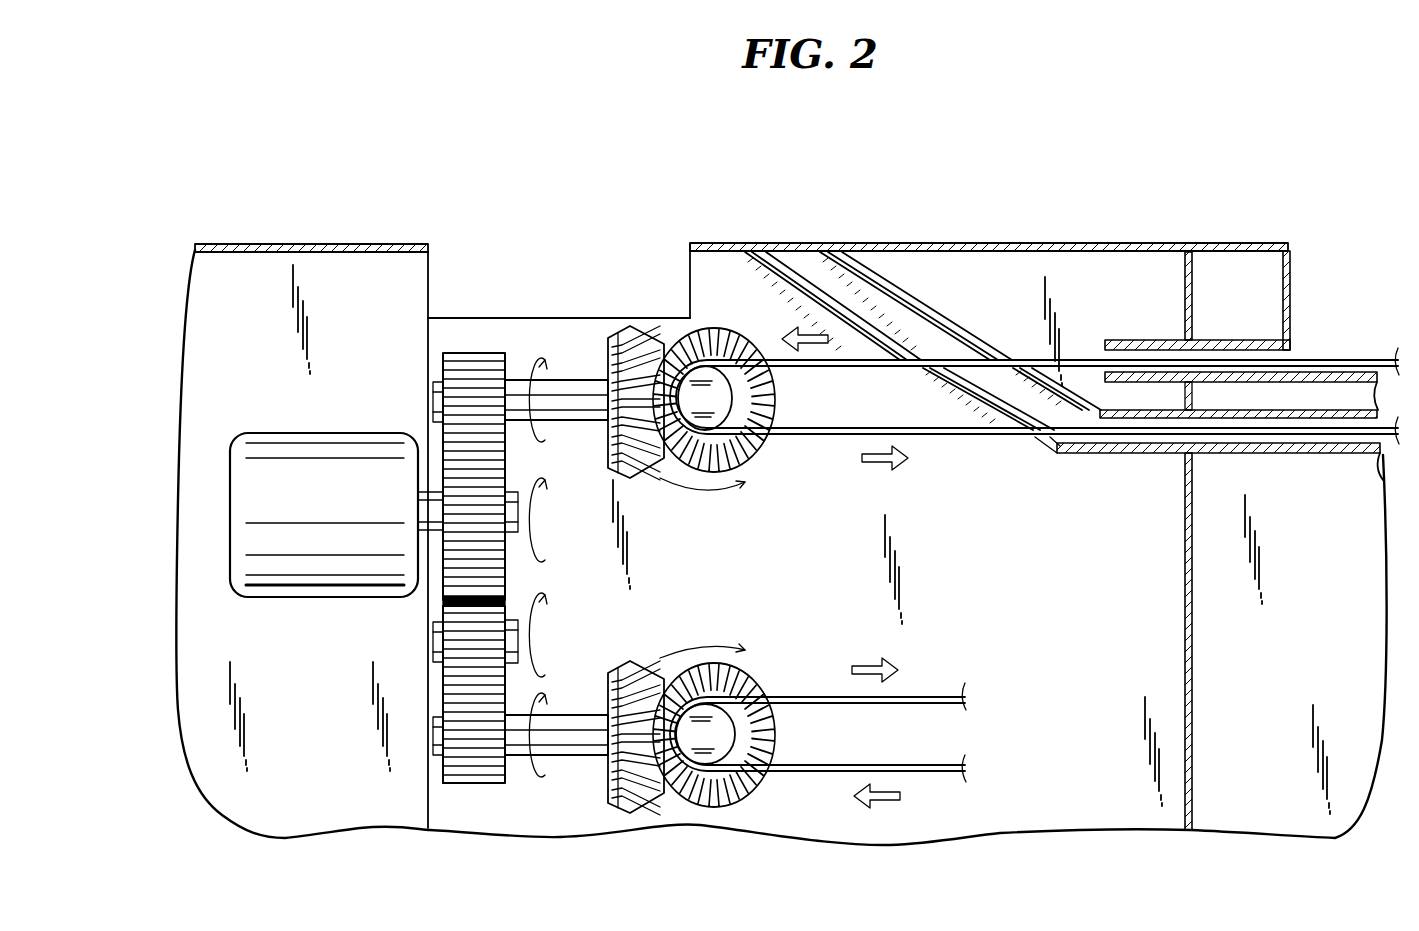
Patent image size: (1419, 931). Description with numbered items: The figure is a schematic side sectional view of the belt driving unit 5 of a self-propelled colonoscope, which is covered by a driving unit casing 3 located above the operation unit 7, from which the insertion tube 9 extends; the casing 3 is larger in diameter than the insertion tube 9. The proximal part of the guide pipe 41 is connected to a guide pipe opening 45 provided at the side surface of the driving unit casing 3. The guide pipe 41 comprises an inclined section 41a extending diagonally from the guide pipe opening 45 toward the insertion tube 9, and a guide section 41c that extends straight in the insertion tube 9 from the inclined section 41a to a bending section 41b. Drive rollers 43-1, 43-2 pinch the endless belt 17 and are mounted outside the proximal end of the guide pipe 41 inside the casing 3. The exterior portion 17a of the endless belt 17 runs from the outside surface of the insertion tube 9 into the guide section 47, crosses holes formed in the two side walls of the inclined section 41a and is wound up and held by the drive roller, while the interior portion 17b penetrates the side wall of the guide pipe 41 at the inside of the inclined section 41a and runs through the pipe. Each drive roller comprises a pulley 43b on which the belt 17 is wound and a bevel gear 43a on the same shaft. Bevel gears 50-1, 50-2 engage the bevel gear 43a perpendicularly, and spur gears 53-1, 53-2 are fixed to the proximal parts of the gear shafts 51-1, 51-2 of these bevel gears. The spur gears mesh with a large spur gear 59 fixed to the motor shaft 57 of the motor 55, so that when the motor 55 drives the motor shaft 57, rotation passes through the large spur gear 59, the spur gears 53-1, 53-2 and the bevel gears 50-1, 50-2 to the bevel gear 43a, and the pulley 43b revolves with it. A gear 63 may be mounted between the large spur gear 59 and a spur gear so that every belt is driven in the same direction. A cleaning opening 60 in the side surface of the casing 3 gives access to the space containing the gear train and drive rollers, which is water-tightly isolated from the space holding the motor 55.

The driving unit casing 3 is at (722, 244).
The belt driving unit 5 is at (545, 218).
The operation unit 7 is at (1232, 228).
The insertion tube 9 is at (1312, 378).
The endless belt 17 is at (830, 430).
The exterior portion of the endless belt 17a is at (1095, 355).
The interior portion of the endless belt 17b is at (1065, 442).
The guide pipe 41 is at (925, 290).
The inclined section 41a is at (1005, 330).
The bending section 41b is at (1000, 440).
The guide section 41c is at (1160, 455).
The drive roller 43-1 is at (708, 421).
The drive roller 43-2 is at (752, 680).
The bevel gear 43a is at (680, 340).
The pulley 43b is at (665, 480).
The guide pipe opening 45 is at (800, 262).
The guide section 47 is at (1250, 370).
The bevel gear 50-1 is at (615, 345).
The bevel gear 50-2 is at (645, 670).
The gear shaft 51-1 is at (545, 378).
The gear shaft 51-2 is at (585, 760).
The spur gear 53-1 is at (470, 352).
The spur gear 53-2 is at (497, 700).
The motor 55 is at (335, 445).
The motor shaft 57 is at (432, 500).
The large spur gear 59 is at (510, 573).
The cleaning opening 60 is at (690, 318).
The gear 63 is at (497, 612).